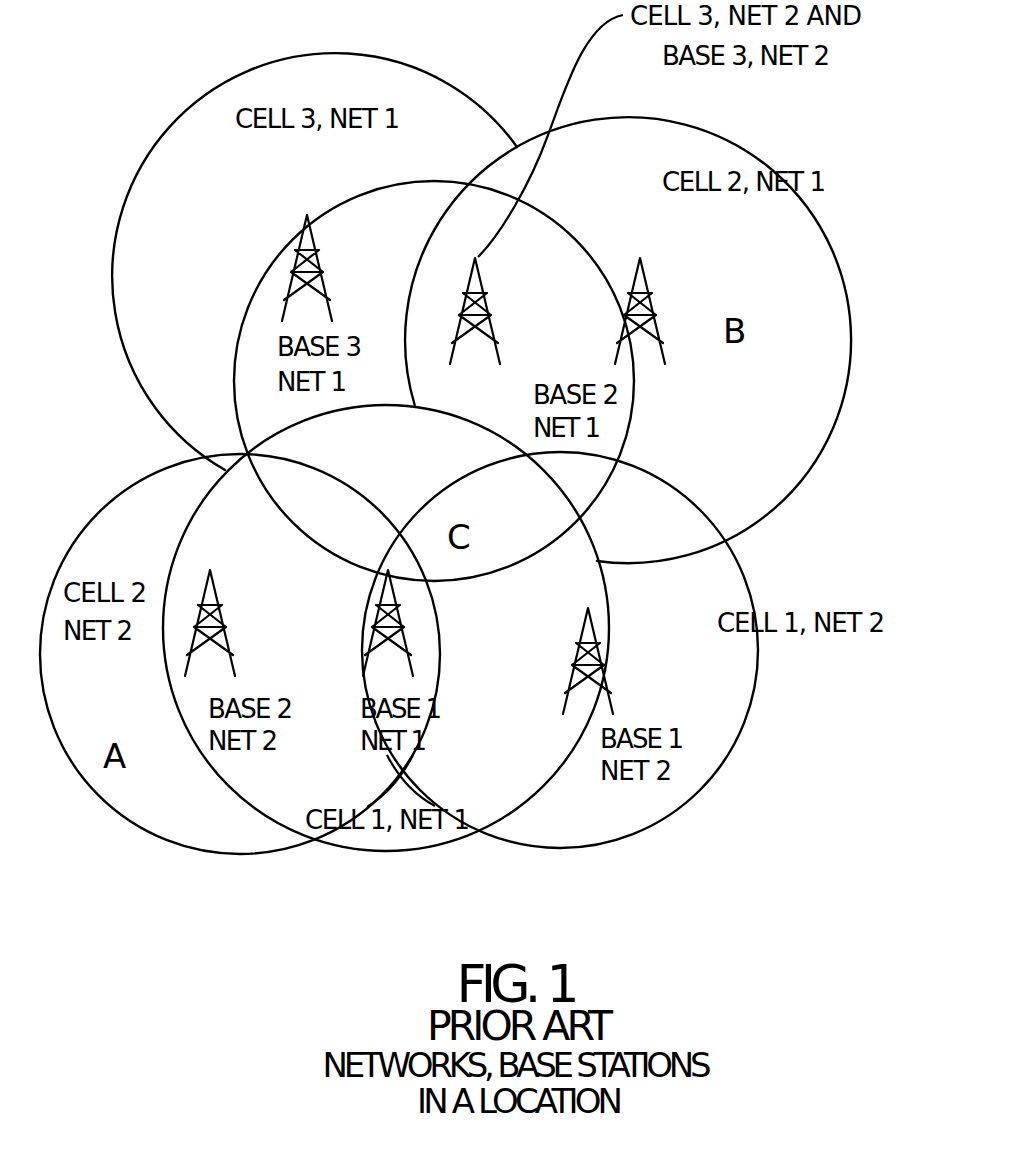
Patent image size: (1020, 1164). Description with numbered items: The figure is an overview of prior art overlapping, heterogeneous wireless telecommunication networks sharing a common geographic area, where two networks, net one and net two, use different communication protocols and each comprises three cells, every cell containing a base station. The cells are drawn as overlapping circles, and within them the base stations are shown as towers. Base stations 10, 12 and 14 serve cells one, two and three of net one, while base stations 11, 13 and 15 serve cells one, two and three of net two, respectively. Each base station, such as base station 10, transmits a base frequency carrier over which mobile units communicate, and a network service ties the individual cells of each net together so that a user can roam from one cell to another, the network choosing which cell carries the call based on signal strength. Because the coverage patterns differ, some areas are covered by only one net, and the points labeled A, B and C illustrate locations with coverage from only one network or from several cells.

The base station 10 is at (396, 621).
The base station 11 is at (601, 645).
The base station 12 is at (645, 293).
The base station 13 is at (217, 602).
The base station 14 is at (312, 246).
The base station 15 is at (481, 291).